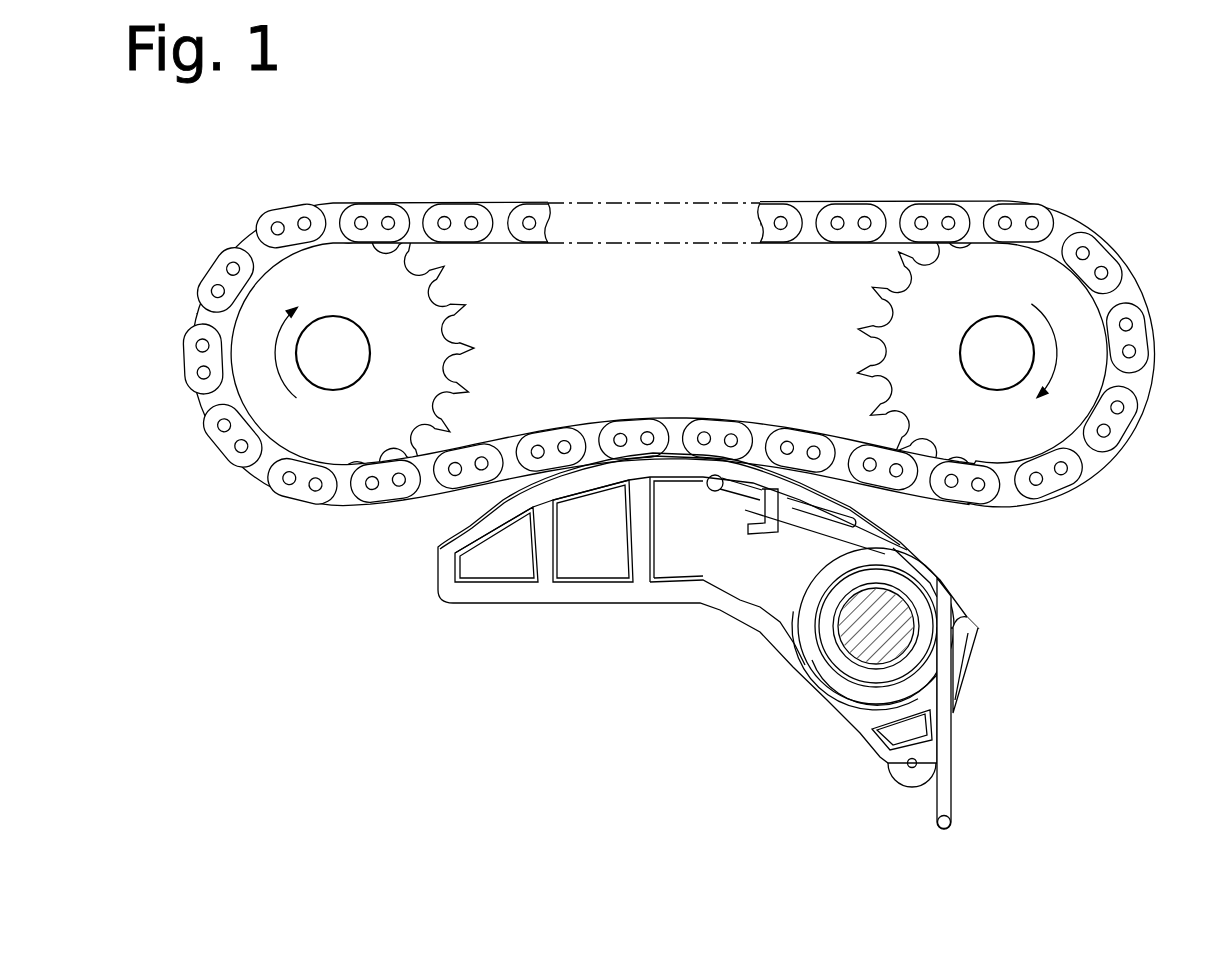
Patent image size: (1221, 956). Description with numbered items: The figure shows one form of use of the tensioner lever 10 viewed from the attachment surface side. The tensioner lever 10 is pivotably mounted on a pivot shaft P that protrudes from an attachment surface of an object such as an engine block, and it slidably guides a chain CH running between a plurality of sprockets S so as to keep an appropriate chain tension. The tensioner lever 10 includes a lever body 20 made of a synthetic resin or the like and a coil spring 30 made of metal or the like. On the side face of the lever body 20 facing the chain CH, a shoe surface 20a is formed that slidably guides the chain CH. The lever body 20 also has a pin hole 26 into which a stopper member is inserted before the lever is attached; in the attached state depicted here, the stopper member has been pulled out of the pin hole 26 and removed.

The sprockets S is at (335, 355).
The chain CH is at (808, 216).
The tensioner lever 10 is at (1002, 722).
The lever body 20 is at (819, 660).
The shoe surface 20a is at (665, 444).
The pin hole 26 is at (906, 766).
The coil spring 30 is at (932, 585).
The pivot shaft P is at (880, 628).